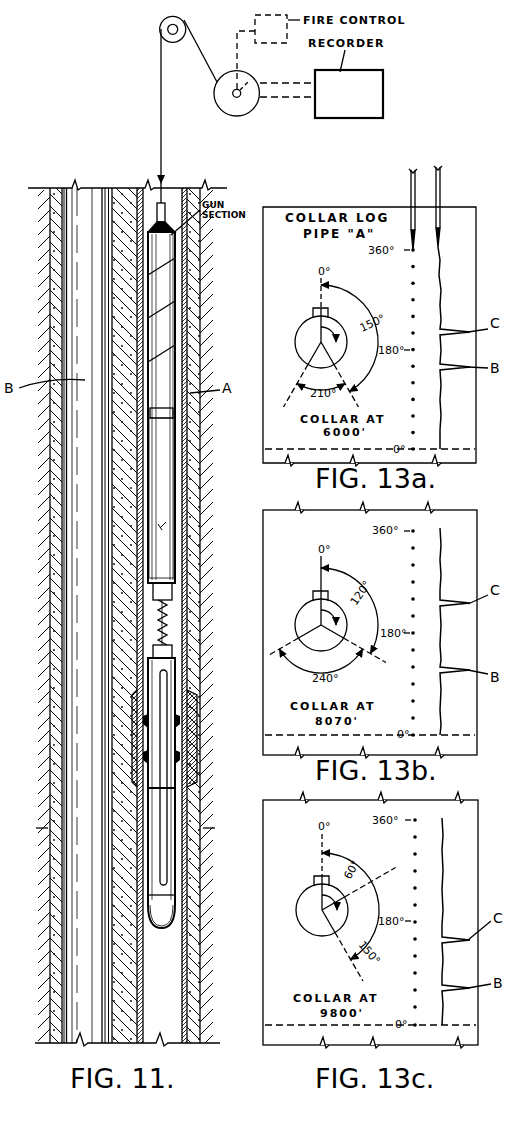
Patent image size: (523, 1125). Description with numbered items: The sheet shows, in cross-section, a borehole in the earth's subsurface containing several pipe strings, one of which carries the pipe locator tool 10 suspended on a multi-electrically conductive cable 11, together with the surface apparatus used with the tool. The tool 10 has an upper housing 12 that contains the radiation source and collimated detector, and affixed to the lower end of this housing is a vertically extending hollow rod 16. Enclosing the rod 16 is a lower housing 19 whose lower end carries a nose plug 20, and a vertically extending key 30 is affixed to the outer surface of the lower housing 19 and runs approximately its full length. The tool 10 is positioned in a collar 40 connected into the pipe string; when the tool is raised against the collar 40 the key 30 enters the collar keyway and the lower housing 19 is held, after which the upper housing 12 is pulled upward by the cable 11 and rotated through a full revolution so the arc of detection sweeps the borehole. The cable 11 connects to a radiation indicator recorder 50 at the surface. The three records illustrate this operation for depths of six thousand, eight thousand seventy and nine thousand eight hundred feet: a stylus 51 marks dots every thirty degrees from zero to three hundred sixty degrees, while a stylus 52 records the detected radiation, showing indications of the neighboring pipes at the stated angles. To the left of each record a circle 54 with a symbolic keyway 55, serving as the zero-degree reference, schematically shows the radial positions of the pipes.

In FIG. 11, the pipe locator tool 10 is at (125, 565).
In FIG. 11, the multi-electrically conductive cable 11 is at (158, 60).
In FIG. 11, the upper housing 12 is at (166, 563).
In FIG. 11, the hollow rod 16 is at (166, 626).
In FIG. 11, the lower housing 19 is at (171, 680).
In FIG. 11, the nose plug 20 is at (166, 912).
In FIG. 11, the key 30 is at (161, 810).
In FIG. 11, the collar 40 is at (190, 732).
In FIG. 11, the radiation indicator recorder 50 is at (358, 100).
In FIG. 13A, the stylus 51 is at (409, 183).
In FIG. 13A, the stylus 52 is at (441, 192).
In FIG. 13A, the circle 54 is at (299, 352).
In FIG. 13B, the circle 54 is at (300, 616).
In FIG. 13C, the circle 54 is at (304, 931).
In FIG. 13A, the symbolic keyway 55 is at (312, 310).
In FIG. 13B, the symbolic keyway 55 is at (314, 594).
In FIG. 13C, the symbolic keyway 55 is at (314, 880).